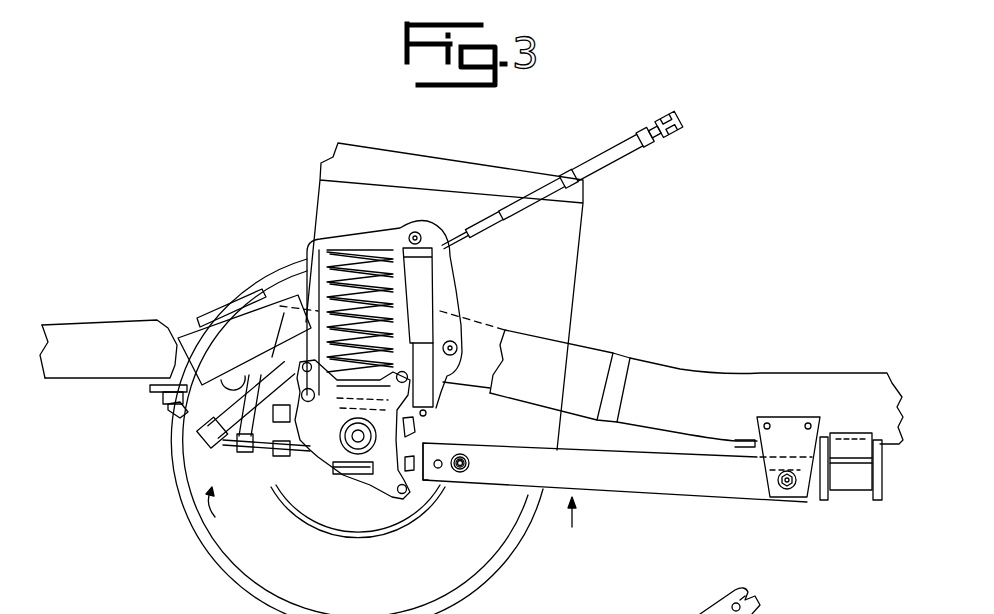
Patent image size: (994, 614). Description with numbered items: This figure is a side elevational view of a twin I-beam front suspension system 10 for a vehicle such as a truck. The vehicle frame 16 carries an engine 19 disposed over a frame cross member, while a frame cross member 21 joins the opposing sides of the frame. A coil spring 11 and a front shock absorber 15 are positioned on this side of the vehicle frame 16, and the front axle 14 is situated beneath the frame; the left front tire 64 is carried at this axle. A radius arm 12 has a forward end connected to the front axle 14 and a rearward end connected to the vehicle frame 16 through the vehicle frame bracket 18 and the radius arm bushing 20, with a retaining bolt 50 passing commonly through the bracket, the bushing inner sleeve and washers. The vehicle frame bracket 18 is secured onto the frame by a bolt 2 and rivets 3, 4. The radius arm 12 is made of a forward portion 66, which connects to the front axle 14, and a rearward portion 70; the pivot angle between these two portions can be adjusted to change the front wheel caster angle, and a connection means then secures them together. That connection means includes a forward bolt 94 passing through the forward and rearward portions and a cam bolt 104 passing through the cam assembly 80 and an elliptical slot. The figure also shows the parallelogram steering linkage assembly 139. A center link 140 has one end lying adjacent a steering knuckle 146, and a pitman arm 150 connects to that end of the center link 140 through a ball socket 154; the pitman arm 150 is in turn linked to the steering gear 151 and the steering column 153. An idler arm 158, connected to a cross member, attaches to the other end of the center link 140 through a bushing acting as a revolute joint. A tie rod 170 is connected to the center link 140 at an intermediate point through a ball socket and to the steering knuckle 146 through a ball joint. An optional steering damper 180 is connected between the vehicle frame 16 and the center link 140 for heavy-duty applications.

The twin I-beam front suspension system 10 is at (280, 150).
The coil spring 11 is at (350, 257).
The radius arm 12 is at (571, 524).
The front axle 14 is at (363, 478).
The front shock absorber 15 is at (435, 281).
The vehicle frame 16 is at (811, 372).
The vehicle frame bracket 18 is at (787, 417).
The engine 19 is at (584, 251).
The bolt 2 is at (734, 444).
The rivet 3 is at (767, 423).
The rivet 4 is at (811, 426).
The radius arm bushing 20 is at (770, 476).
The frame cross member 21 is at (850, 491).
The retaining bolt 50 is at (786, 490).
The left front tire 64 is at (247, 592).
The forward portion of radius arm 66 is at (426, 483).
The rearward portion of radius arm 70 is at (653, 498).
The cam assembly 80 is at (470, 463).
The forward bolt 94 is at (440, 468).
The cam bolt 104 is at (467, 456).
The parallelogram steering linkage assembly 139 is at (227, 511).
The center link 140 is at (233, 451).
The steering knuckle 146 is at (270, 380).
The pitman arm 150 is at (196, 385).
The steering gear 151 is at (199, 318).
The steering column 153 is at (603, 158).
The ball socket 154 is at (207, 423).
The idler arm 158 is at (300, 468).
The tie rod 170 is at (262, 456).
The steering damper 180 is at (235, 425).